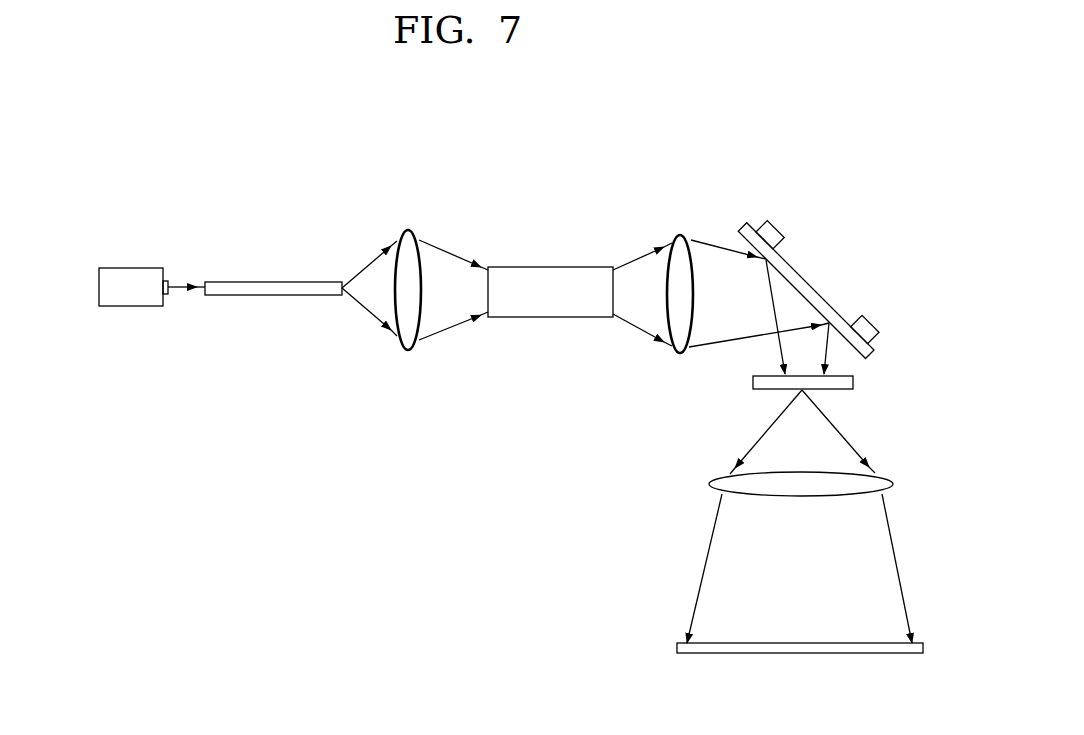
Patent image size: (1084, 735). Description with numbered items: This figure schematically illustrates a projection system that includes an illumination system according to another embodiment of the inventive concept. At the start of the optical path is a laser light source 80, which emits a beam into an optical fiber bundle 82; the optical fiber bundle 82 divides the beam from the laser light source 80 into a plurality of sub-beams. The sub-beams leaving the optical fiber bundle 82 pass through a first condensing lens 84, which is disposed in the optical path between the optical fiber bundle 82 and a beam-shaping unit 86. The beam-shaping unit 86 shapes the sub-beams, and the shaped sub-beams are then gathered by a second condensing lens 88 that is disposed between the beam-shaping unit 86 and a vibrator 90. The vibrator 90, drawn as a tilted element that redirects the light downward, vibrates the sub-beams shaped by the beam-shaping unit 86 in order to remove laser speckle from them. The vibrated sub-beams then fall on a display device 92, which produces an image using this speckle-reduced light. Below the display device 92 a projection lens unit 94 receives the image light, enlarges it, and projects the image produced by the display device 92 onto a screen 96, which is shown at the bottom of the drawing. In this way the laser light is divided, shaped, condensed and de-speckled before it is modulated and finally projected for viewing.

The laser light source 80 is at (140, 266).
The optical fiber bundle 82 is at (273, 281).
The first condensing lens 84 is at (409, 229).
The beam-shaping unit 86 is at (550, 266).
The second condensing lens 88 is at (680, 234).
The vibrator 90 is at (837, 264).
The display device 92 is at (855, 383).
The projection lens unit 94 is at (708, 483).
The screen 96 is at (676, 648).